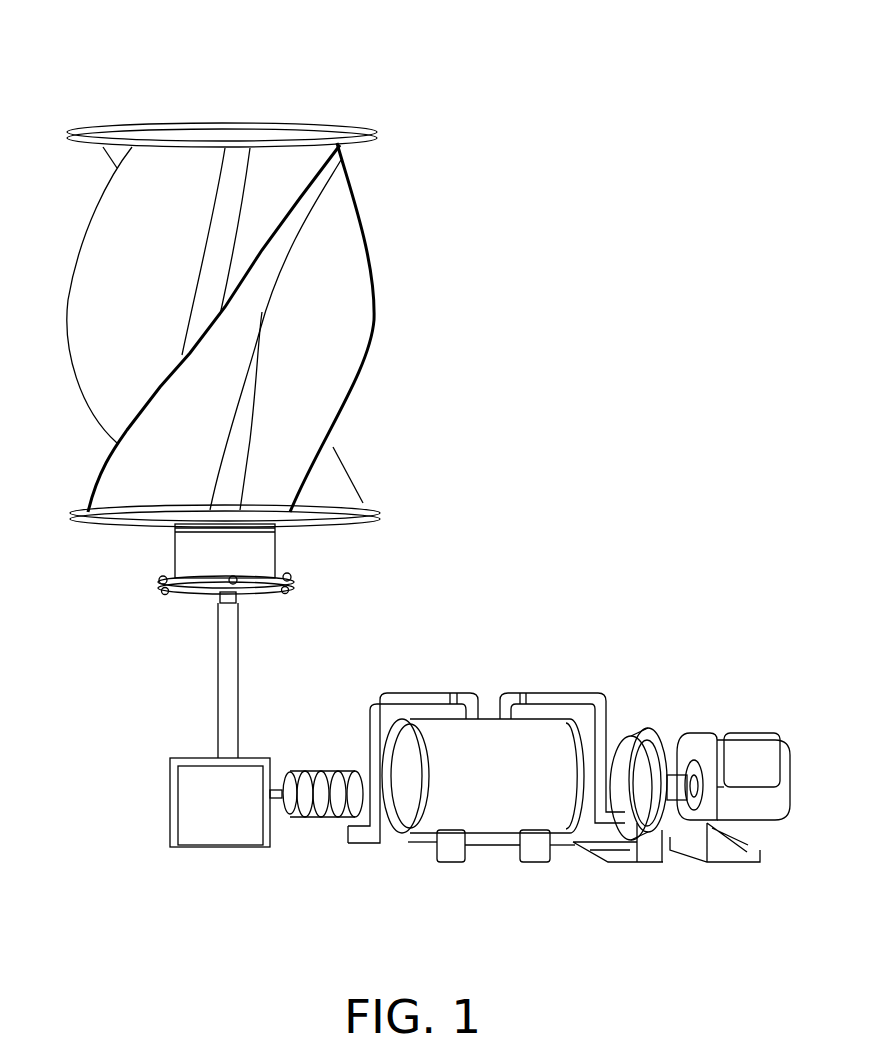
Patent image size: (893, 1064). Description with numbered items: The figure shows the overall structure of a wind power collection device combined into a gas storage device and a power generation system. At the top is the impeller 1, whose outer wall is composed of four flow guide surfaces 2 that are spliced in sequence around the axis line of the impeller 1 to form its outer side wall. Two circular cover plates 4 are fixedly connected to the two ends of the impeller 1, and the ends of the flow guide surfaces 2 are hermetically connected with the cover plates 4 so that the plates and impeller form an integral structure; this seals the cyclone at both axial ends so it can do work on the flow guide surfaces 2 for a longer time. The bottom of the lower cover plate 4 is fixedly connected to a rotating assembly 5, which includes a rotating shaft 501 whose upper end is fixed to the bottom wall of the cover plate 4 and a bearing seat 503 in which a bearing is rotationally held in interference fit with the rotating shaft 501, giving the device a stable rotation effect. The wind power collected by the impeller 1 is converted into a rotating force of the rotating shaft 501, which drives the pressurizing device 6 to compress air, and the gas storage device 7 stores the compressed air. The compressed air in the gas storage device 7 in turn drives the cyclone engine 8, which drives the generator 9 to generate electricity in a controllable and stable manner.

The impeller 1 is at (377, 253).
The flow guide surface 2 is at (333, 340).
The cover plate 4 is at (253, 135).
The rotating assembly 5 is at (56, 602).
The rotating shaft 501 is at (217, 693).
The bearing seat 503 is at (212, 547).
The pressurizing device 6 is at (310, 795).
The gas storage device 7 is at (513, 785).
The cyclone engine 8 is at (650, 795).
The generator 9 is at (763, 803).